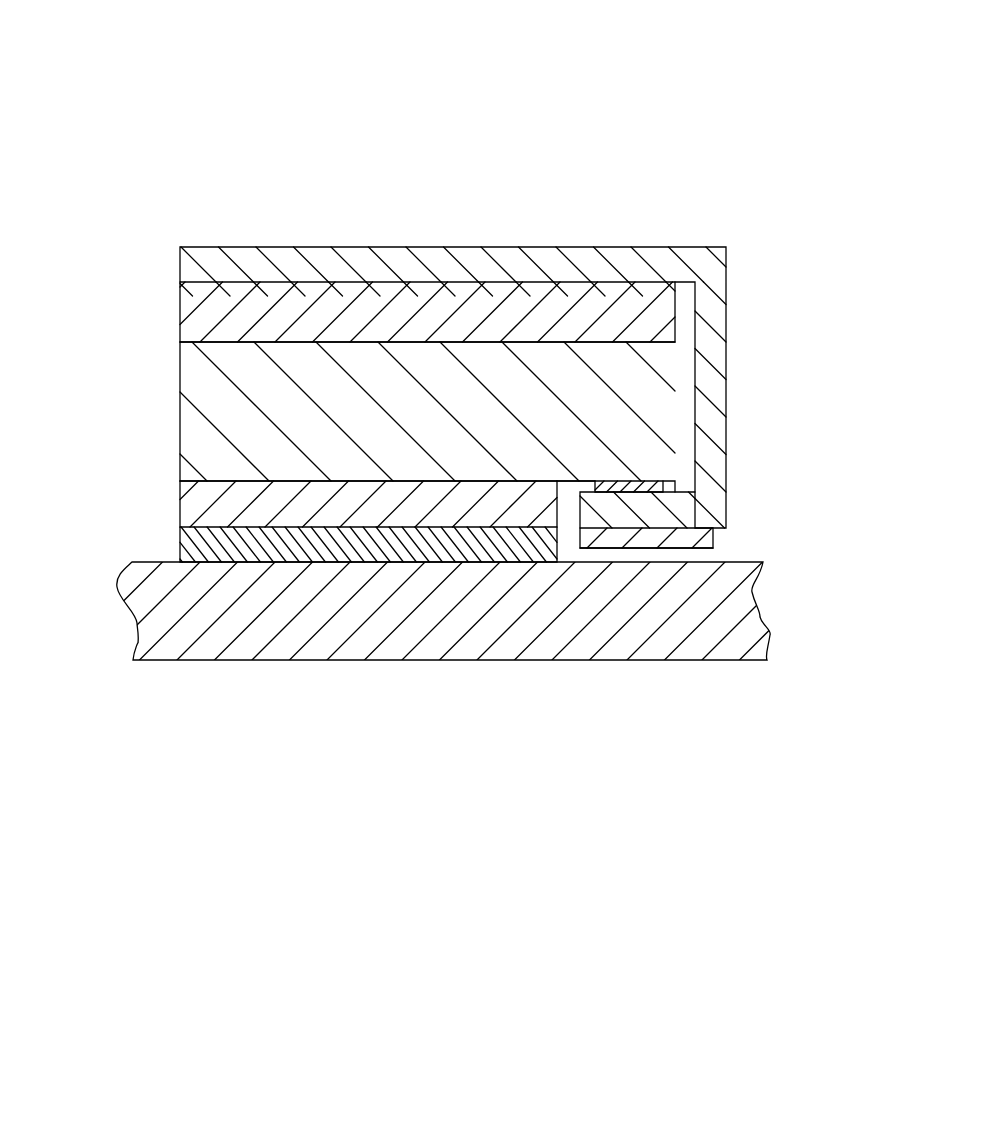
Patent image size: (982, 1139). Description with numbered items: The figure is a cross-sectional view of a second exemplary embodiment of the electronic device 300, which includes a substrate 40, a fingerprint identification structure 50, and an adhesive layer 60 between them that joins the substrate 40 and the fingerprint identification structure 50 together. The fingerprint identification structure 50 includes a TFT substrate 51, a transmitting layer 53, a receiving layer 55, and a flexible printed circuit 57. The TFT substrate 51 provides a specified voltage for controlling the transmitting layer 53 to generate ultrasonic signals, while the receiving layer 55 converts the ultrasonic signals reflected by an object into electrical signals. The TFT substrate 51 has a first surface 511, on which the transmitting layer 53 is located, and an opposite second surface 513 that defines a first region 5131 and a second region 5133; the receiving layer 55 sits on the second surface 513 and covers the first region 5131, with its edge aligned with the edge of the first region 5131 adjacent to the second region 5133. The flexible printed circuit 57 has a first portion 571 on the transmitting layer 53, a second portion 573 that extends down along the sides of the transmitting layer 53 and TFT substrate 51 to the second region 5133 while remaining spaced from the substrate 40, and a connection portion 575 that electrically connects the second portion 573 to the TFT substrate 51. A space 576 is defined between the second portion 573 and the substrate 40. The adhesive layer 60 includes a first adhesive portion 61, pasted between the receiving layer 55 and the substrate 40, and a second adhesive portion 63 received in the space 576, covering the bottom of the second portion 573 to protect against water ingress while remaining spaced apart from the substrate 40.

The electronic device 300 is at (258, 65).
The substrate 40 is at (752, 602).
The fingerprint identification structure 50 is at (78, 248).
The flexible printed circuit 57 is at (180, 266).
The first portion 571 is at (633, 260).
The second portion 573 is at (647, 508).
The connection portion 575 is at (630, 482).
The space 576 is at (722, 543).
The transmitting layer 53 is at (195, 311).
The thin film transistor substrate 51 is at (213, 396).
The first surface 511 is at (364, 342).
The second surface 513 is at (500, 741).
The first region 5131 is at (327, 482).
The second region 5133 is at (568, 481).
The receiving layer 55 is at (203, 505).
The adhesive layer 60 is at (703, 724).
The first adhesive portion 61 is at (540, 550).
The second adhesive portion 63 is at (627, 542).